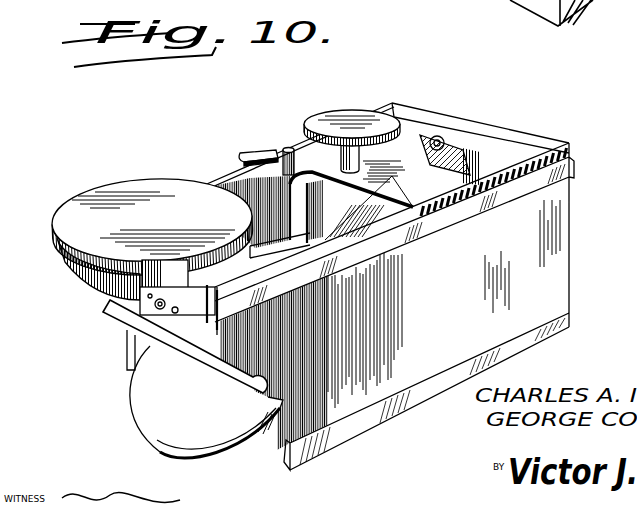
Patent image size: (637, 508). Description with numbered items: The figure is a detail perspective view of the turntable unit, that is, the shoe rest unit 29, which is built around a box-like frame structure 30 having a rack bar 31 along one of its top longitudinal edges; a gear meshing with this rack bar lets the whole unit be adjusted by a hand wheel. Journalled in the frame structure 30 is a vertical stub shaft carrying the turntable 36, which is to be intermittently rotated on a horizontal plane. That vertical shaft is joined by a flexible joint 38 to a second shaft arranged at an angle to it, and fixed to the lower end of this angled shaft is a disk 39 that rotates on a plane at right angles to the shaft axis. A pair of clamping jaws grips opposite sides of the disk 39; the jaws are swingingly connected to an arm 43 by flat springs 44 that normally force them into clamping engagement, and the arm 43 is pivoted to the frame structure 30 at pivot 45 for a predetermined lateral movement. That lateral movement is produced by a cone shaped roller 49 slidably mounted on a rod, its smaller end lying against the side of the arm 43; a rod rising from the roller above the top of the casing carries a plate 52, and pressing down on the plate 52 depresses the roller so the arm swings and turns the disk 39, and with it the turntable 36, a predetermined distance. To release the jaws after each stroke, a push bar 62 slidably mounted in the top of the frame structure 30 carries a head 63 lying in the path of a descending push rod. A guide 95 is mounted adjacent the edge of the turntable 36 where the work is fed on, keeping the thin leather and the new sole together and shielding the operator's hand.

The shoe rest unit 29 is at (297, 144).
The box-like frame structure 30 is at (394, 306).
The rack bar 31 is at (522, 158).
The turntable 36 is at (115, 203).
The flexible joint 38 is at (112, 312).
The disk 39 is at (158, 413).
The arm 43 is at (363, 218).
The flat springs 44 is at (300, 246).
The pivot 45 is at (447, 135).
The cone shaped roller 49 is at (340, 182).
The plate 52 is at (350, 110).
The push bar 62 is at (290, 148).
The head 63 is at (258, 154).
The guide 95 is at (172, 258).